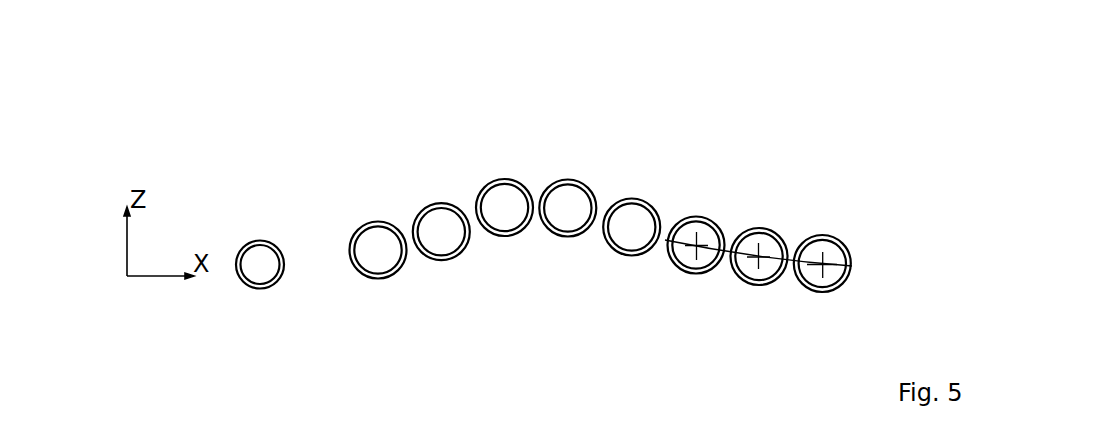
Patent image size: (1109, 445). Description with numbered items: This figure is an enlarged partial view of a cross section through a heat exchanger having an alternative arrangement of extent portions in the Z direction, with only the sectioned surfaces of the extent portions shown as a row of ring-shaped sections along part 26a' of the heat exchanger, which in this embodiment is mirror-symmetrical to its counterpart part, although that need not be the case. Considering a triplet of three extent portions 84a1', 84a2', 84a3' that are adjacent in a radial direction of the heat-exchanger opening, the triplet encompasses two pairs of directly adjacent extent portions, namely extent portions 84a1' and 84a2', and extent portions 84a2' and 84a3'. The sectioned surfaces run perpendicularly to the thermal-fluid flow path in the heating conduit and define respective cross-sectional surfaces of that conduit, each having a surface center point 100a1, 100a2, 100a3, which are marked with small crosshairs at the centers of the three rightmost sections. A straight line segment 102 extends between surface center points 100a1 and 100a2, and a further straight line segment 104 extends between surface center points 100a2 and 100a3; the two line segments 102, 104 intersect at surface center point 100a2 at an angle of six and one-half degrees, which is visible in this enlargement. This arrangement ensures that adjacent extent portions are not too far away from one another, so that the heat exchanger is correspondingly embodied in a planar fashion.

The part of the heat exchanger 26a' is at (679, 120).
The surface center point 100a3 is at (697, 243).
The surface center point 100a2 is at (758, 258).
The surface center point 100a1 is at (823, 267).
The extent portion 84a3' is at (677, 277).
The extent portion 84a2' is at (749, 290).
The extent portion 84a1' is at (833, 291).
The straight line segment 102 is at (725, 253).
The straight line segment 104 is at (807, 263).